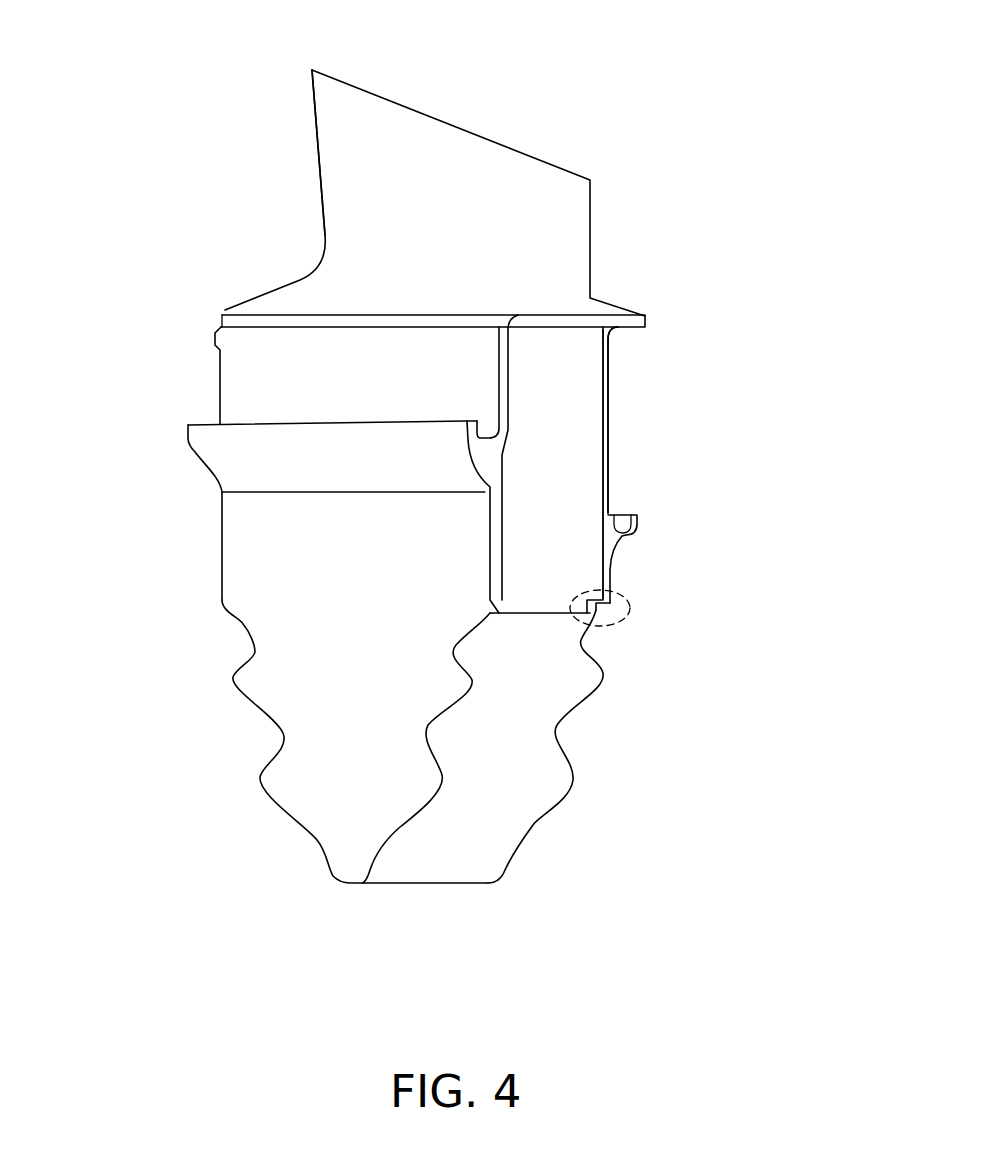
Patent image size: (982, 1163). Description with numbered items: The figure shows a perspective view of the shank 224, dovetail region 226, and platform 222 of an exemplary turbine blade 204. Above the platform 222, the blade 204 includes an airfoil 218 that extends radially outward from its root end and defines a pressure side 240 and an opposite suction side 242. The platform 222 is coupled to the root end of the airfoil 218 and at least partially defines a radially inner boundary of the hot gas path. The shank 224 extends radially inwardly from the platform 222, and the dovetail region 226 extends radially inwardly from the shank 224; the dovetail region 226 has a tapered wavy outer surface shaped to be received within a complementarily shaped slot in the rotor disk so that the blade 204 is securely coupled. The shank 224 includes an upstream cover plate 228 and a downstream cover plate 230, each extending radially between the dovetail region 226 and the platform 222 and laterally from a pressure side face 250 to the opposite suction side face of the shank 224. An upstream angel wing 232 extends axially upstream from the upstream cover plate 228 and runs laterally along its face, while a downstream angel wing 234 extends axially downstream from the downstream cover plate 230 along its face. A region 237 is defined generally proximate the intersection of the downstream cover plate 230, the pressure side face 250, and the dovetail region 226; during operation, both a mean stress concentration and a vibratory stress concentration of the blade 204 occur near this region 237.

The turbine blade 204 is at (708, 114).
The airfoil 218 is at (642, 195).
The platform 222 is at (238, 322).
The shank 224 is at (731, 335).
The dovetail region 226 is at (731, 627).
The upstream cover plate 228 is at (247, 402).
The downstream cover plate 230 is at (608, 390).
The upstream angel wing 232 is at (193, 453).
The downstream angel wing 234 is at (613, 542).
The region 237 is at (628, 621).
The pressure side 240 is at (390, 203).
The suction side 242 is at (317, 173).
The pressure side face 250 is at (622, 468).